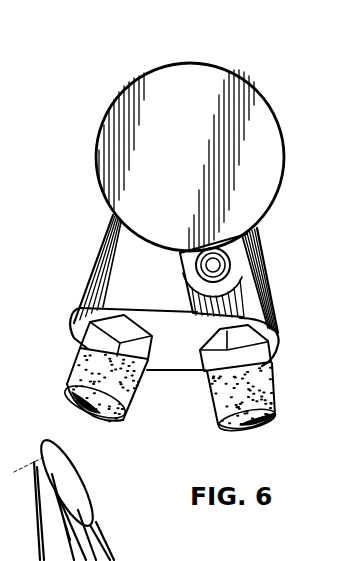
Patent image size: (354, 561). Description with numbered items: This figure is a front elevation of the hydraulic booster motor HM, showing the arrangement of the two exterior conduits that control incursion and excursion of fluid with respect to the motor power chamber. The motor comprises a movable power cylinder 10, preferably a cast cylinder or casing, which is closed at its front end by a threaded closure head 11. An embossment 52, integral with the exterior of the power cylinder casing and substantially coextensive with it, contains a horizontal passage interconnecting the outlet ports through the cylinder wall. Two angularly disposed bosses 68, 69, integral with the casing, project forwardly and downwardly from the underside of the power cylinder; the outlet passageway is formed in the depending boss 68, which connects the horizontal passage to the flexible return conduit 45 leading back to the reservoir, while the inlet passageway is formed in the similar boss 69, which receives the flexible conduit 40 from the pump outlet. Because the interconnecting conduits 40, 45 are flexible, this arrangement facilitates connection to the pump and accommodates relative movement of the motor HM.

The hydraulic booster motor HM is at (173, 77).
The movable power cylinder 10 is at (283, 152).
The threaded closure head 11 is at (253, 95).
The flexible conduit 40 is at (73, 385).
The flexible return conduit 45 is at (270, 382).
The embossment 52 is at (262, 272).
The angularly disposed boss 68 is at (259, 240).
The angularly disposed boss 69 is at (112, 250).